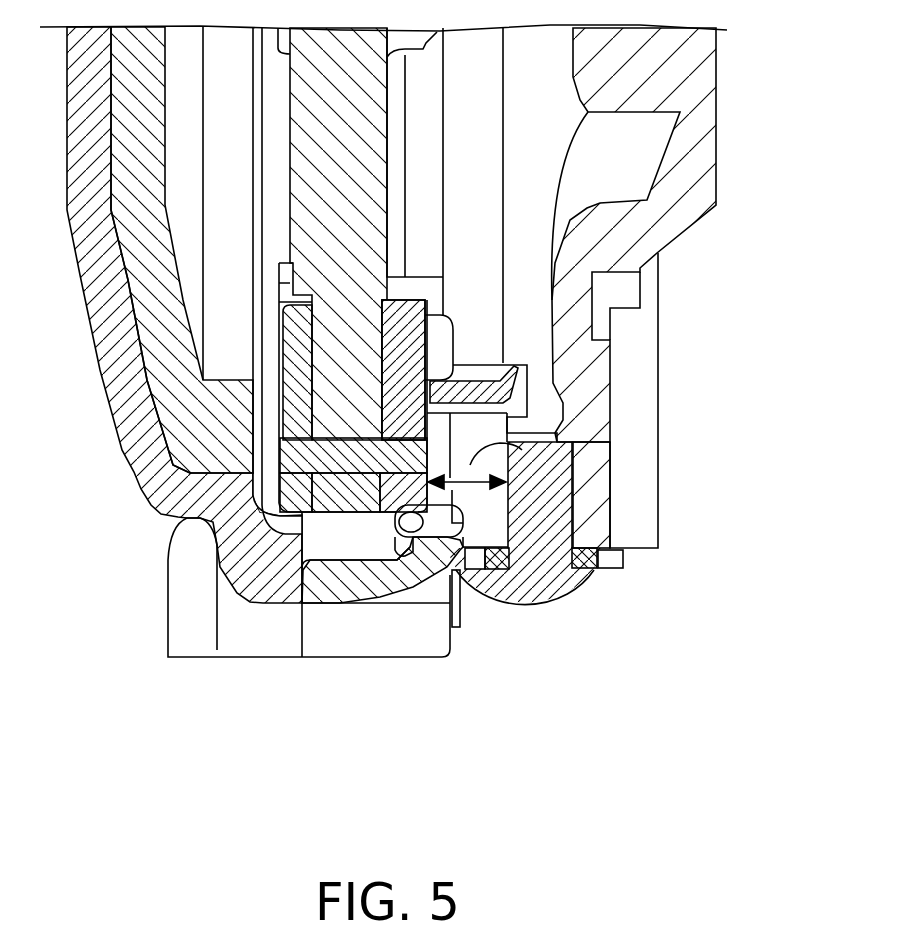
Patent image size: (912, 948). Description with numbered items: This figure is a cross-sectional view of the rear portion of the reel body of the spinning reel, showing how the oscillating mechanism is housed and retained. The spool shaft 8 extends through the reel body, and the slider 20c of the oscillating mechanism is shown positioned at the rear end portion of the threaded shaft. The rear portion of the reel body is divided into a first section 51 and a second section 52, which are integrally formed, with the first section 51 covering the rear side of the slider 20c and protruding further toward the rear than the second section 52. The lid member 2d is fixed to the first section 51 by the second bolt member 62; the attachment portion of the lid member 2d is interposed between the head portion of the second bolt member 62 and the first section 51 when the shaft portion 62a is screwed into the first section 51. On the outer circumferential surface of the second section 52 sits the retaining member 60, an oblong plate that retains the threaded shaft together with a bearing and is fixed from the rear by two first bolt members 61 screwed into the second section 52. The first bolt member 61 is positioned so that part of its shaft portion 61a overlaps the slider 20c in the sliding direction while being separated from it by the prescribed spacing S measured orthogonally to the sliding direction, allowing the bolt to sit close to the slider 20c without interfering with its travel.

The lid member 2d is at (135, 438).
The spool shaft 8 is at (315, 227).
The slider 20c is at (430, 340).
The prescribed spacing S is at (540, 436).
The shaft portion 61a is at (550, 465).
The second section 52 is at (595, 508).
The retaining member 60 is at (612, 560).
The first bolt member 61 is at (487, 590).
The second bolt member 62 is at (185, 607).
The shaft portion 62a is at (457, 630).
The first section 51 is at (333, 635).